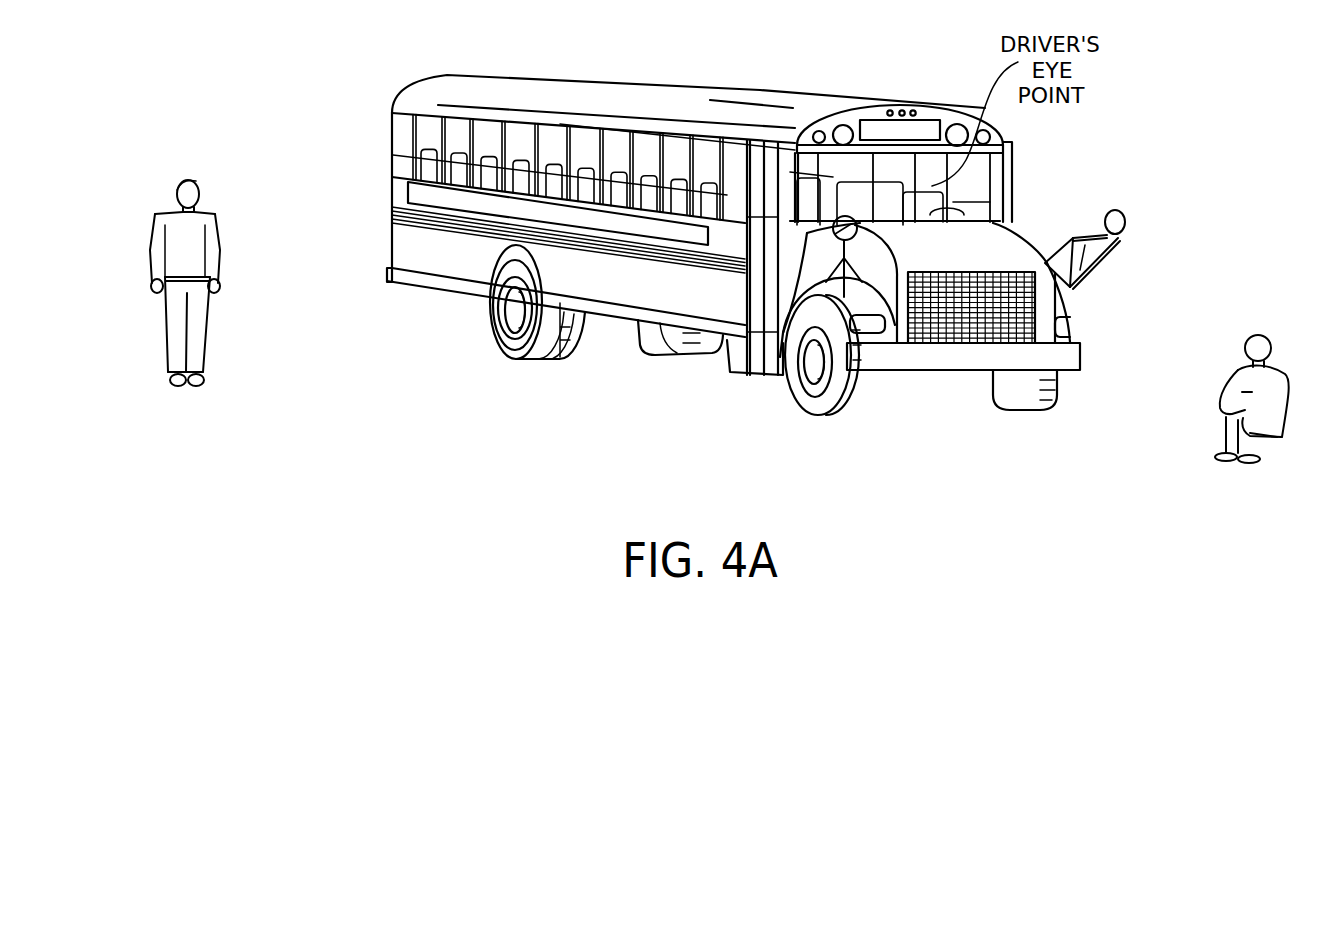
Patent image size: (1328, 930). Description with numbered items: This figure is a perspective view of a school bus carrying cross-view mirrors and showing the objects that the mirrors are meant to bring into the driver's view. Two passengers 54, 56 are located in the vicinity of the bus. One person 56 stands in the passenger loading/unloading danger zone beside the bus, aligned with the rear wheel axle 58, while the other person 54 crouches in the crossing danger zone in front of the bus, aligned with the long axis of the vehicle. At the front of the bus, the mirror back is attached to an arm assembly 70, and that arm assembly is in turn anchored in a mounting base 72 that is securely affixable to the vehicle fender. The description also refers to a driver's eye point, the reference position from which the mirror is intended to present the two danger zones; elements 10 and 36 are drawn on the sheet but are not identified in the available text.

The test target marker 10 is at (745, 432).
The school bus 36 is at (628, 280).
The person 54 is at (1222, 412).
The person 56 is at (172, 337).
The rear wheel axle 58 is at (498, 310).
The arm assembly 70 is at (1103, 258).
The mounting base 72 is at (1070, 290).